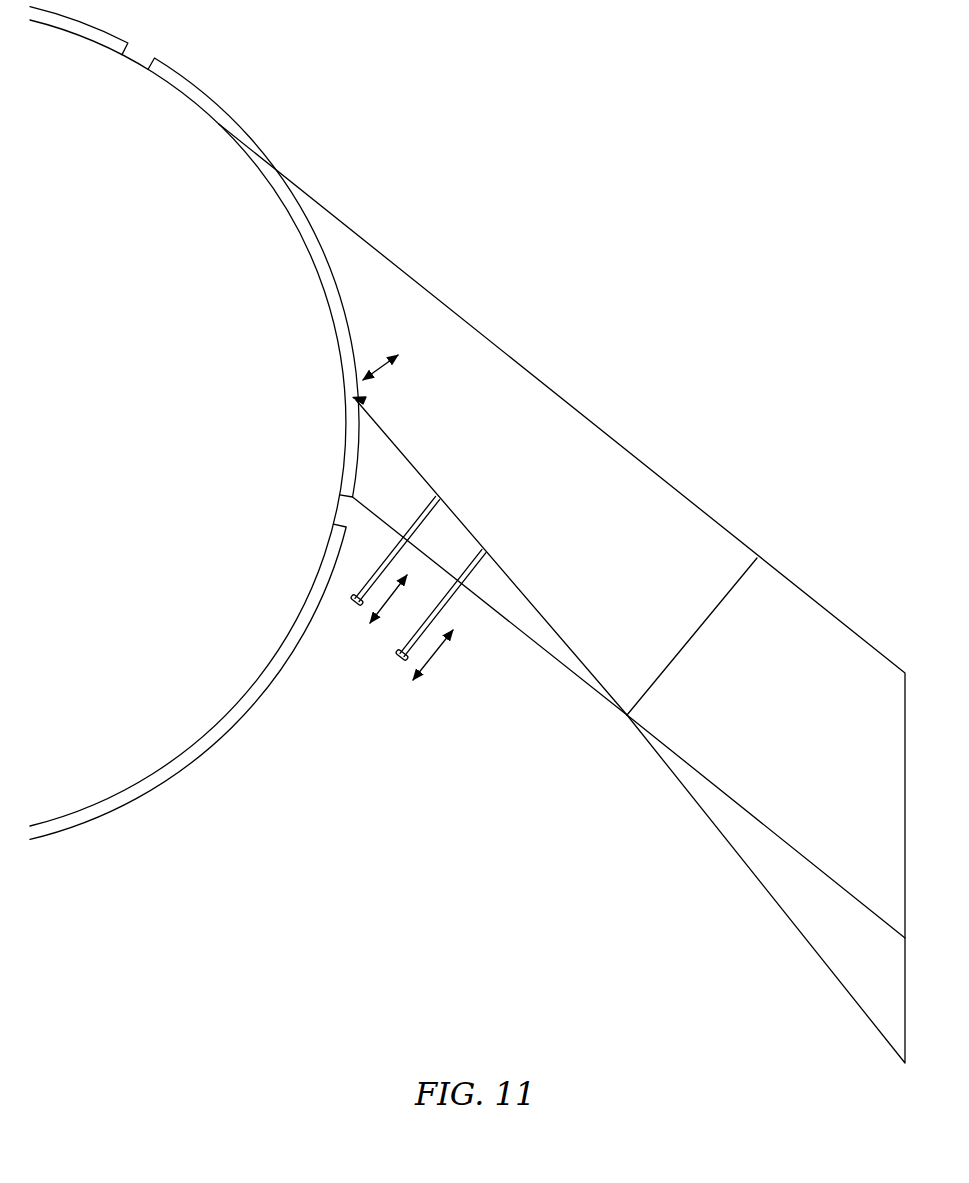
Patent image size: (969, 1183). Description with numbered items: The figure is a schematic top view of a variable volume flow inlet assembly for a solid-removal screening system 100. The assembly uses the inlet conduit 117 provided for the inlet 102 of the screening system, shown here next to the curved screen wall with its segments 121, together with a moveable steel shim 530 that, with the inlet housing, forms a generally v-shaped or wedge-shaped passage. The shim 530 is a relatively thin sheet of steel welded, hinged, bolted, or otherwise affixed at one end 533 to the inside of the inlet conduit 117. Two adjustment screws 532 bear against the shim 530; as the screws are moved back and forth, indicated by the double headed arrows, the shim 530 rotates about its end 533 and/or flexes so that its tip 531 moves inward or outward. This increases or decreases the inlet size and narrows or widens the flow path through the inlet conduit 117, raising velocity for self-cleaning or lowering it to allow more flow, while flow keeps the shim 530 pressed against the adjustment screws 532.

The screening system 100 is at (559, 40).
The inlet 102 is at (578, 405).
The inlet conduit 117 is at (547, 654).
The segmented ring 121 is at (293, 57).
The shim 530 is at (523, 592).
The tip 531 is at (355, 398).
The adjustment screws 532 is at (352, 608).
The end 533 is at (626, 708).